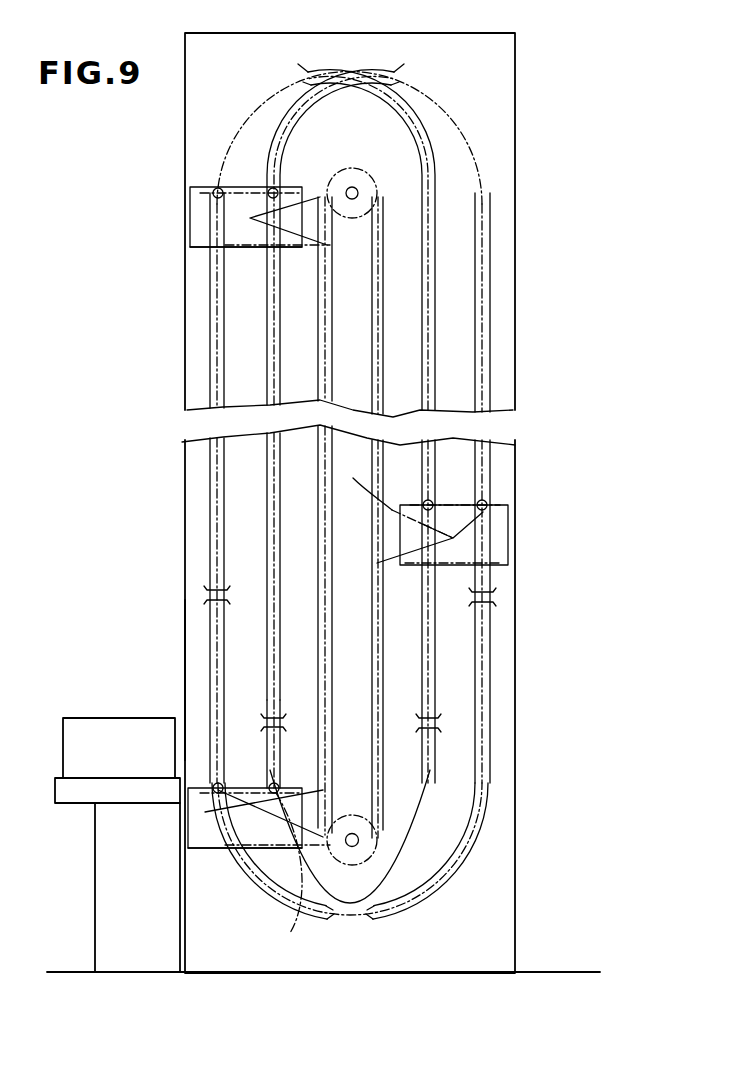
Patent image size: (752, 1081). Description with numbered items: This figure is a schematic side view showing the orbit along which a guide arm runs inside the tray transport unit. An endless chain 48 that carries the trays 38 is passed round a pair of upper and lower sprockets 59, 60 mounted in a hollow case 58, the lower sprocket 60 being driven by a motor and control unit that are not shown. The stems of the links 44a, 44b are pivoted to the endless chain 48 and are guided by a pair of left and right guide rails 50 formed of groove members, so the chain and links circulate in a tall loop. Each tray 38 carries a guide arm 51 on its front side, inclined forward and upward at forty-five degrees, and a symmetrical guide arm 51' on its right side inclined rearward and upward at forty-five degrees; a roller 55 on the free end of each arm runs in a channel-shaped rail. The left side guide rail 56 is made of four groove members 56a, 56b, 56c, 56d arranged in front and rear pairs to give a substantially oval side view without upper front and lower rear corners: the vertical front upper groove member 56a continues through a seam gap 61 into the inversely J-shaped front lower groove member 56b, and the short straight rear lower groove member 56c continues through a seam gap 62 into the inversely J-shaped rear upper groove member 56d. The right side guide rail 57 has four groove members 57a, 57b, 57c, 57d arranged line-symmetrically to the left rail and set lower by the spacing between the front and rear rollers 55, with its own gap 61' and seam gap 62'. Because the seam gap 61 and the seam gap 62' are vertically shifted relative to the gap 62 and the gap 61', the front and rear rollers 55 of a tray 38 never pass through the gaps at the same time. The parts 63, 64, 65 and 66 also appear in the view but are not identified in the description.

The hollow case 58 is at (500, 32).
The belt path arc 63 is at (493, 143).
The left side guide rail 56 is at (208, 388).
The front upper groove member 56a is at (211, 522).
The front lower groove member 56b is at (325, 918).
The rear lower groove member 56c is at (436, 770).
The rear upper groove member 56d is at (436, 338).
The right side guide rail 57 is at (264, 367).
The groove member of right side guide rail 57a is at (492, 380).
The groove member of right side guide rail 57b is at (497, 658).
The groove member of right side guide rail 57c is at (263, 745).
The groove member of right side guide rail 57d is at (266, 487).
The endless chain 48 is at (327, 342).
The guide rail 50 is at (327, 272).
The upper sprocket 59 is at (362, 187).
The lower sprocket 60 is at (353, 814).
The link 44a is at (318, 232).
The link 44b is at (380, 565).
The guide arm 51 is at (316, 519).
The guide arm 51' is at (350, 509).
The roller 55 is at (216, 189).
The tray 38 is at (215, 850).
The seam gap 61 is at (177, 594).
The gap 61' is at (518, 597).
The seam gap 62 is at (487, 733).
The seam gap 62' is at (291, 696).
The drive unit 64 is at (103, 721).
The side wall 65 is at (181, 673).
The support stand 66 is at (60, 778).